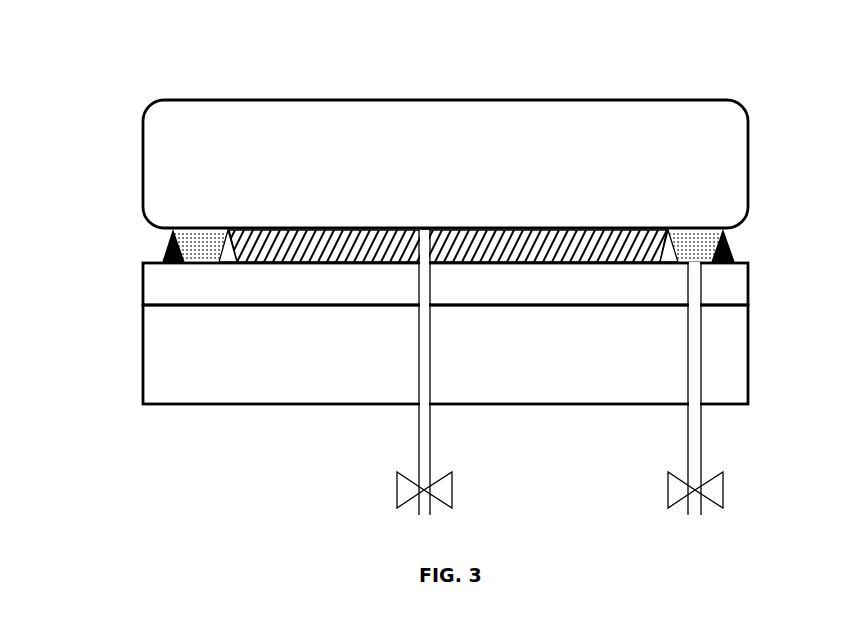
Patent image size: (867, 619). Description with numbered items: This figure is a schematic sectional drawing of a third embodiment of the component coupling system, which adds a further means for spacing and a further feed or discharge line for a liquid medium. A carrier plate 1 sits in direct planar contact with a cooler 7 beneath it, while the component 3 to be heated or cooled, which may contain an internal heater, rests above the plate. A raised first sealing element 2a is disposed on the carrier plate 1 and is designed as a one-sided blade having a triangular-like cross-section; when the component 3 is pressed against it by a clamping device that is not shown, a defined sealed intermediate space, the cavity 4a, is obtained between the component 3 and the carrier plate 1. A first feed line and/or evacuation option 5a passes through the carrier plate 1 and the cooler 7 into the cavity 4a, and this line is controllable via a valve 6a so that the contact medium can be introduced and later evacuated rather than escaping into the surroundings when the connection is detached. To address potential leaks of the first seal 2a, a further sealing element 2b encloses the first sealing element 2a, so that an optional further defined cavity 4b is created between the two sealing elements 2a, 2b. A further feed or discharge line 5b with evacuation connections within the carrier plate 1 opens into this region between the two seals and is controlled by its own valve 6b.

The carrier plate 1 is at (445, 284).
The cooler 7 is at (445, 354).
The component to be heated or cooled 3 is at (445, 164).
The first sealing element 2a is at (667, 228).
The further sealing element 2b is at (165, 247).
The defined cavity 4a is at (467, 238).
The further defined cavity 4b is at (697, 238).
The first feed line and/or evacuation option 5a is at (416, 442).
The further feed line and/or evacuation option 5b is at (686, 442).
The valve for a first feed or discharge line 6a is at (454, 488).
The valve for a further feed or discharge line 6b is at (725, 488).